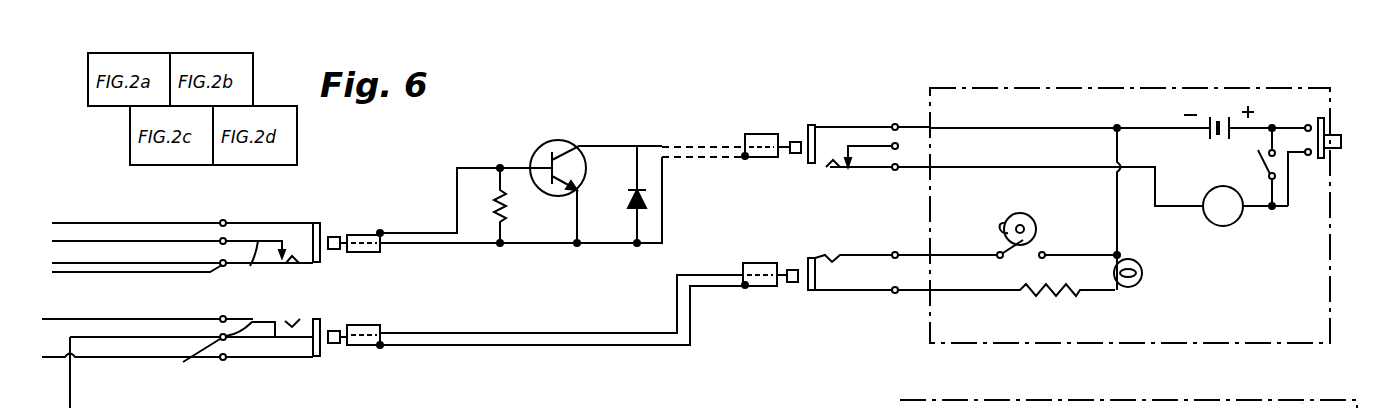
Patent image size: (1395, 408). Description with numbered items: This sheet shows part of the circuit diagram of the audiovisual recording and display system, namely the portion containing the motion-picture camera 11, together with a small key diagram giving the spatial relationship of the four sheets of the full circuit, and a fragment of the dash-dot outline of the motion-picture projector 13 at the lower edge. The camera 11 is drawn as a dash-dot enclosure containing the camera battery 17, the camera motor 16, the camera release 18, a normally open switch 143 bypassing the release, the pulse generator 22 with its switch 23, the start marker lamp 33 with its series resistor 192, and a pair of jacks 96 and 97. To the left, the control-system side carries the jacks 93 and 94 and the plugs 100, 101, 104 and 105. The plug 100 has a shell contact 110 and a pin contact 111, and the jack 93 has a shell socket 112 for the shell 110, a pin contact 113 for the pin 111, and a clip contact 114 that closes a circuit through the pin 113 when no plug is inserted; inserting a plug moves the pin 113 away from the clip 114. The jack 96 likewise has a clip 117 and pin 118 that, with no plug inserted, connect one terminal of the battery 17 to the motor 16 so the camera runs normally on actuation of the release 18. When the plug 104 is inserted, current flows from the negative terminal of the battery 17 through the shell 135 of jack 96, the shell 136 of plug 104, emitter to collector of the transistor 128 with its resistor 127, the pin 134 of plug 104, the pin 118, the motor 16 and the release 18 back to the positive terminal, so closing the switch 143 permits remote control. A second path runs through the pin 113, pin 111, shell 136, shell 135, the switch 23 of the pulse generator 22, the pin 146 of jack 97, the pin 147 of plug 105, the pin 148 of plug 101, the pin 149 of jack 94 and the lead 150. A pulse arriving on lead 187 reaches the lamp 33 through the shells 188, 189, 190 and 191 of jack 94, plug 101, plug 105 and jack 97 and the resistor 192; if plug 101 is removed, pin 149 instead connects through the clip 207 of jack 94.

In FIG. 2D, the motion-picture projector 13 is at (1202, 400).
In FIG. 6, the jack 93 is at (275, 219).
In FIG. 6, the jack 94 is at (263, 310).
In FIG. 6, the jack 96 is at (880, 113).
In FIG. 6, the jack 97 is at (878, 315).
In FIG. 6, the plug 100 is at (380, 224).
In FIG. 6, the camera plug 101 is at (377, 316).
In FIG. 6, the plug 104 is at (766, 129).
In FIG. 6, the plug 105 is at (764, 259).
In FIG. 6, the shell contact 110 is at (375, 253).
In FIG. 6, the pin contact 111 is at (333, 237).
In FIG. 6, the shell socket 112 is at (318, 263).
In FIG. 6, the pin contact 113 is at (265, 268).
In FIG. 6, the clip contact 114 is at (246, 270).
In FIG. 6, the clip 117 is at (892, 144).
In FIG. 6, the pin 118 is at (865, 170).
In FIG. 6, the resistor 127 is at (505, 212).
In FIG. 6, the transistor 128 is at (570, 142).
In FIG. 6, the pin 134 is at (796, 153).
In FIG. 6, the shell 135 is at (810, 125).
In FIG. 6, the shell 136 is at (760, 158).
In FIG. 6, the pin 146 is at (870, 252).
In FIG. 6, the pin 147 is at (793, 282).
In FIG. 6, the pin 148 is at (334, 343).
In FIG. 6, the pin 149 is at (189, 365).
In FIG. 6, the lead 150 is at (120, 318).
In FIG. 6, the lead 187 is at (103, 362).
In FIG. 6, the shell 188 is at (317, 358).
In FIG. 6, the shell 189 is at (384, 322).
In FIG. 6, the shell 190 is at (812, 258).
In FIG. 6, the shell 191 is at (825, 290).
In FIG. 6, the resistor 192 is at (1060, 296).
In FIG. 6, the clip 207 is at (275, 357).
In FIG. 6, the motion-picture camera 11 is at (1310, 84).
In FIG. 6, the camera motor 16 is at (1237, 220).
In FIG. 6, the camera battery 17 is at (1214, 117).
In FIG. 6, the camera release 18 is at (1340, 149).
In FIG. 6, the pulse generator 22 is at (1075, 210).
In FIG. 6, the switch 23 is at (1020, 256).
In FIG. 6, the start marker lamp 33 is at (1140, 282).
In FIG. 6, the normally open switch 143 is at (1258, 164).